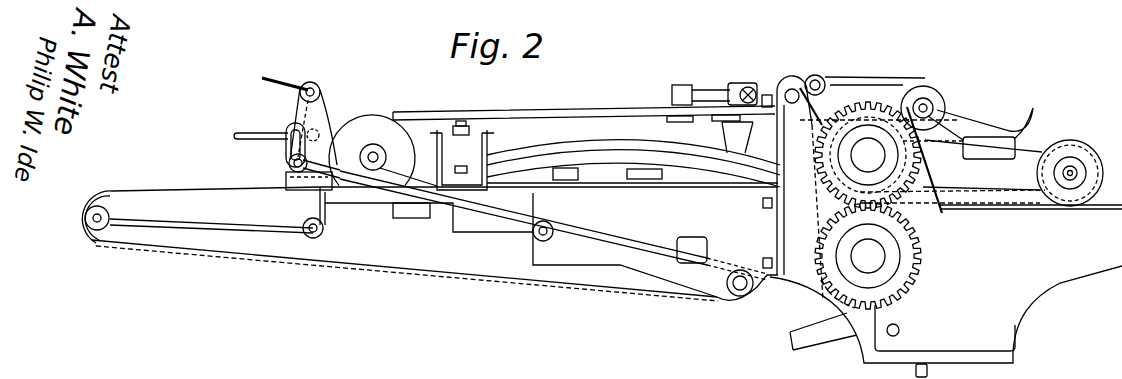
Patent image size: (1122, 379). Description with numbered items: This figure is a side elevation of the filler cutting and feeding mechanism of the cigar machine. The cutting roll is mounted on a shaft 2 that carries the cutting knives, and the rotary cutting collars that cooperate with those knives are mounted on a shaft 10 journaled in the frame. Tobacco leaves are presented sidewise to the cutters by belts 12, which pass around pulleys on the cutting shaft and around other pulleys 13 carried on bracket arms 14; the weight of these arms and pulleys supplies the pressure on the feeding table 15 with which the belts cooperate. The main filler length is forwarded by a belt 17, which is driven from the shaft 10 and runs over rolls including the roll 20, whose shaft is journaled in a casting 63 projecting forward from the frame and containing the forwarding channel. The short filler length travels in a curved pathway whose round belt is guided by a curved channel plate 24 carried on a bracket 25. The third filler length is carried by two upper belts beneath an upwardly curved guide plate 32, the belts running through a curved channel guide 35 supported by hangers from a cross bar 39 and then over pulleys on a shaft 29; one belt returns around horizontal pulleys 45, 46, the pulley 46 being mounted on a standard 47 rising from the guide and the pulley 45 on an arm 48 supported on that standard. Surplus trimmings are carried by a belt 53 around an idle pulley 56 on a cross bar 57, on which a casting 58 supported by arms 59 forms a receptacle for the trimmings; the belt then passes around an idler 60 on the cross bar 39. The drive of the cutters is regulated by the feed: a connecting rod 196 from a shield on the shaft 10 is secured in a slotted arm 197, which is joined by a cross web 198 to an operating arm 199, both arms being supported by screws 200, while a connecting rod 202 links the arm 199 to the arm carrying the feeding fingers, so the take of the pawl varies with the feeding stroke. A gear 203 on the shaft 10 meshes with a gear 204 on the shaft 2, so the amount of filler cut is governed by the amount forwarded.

The shaft 2 is at (868, 155).
The shaft 10 is at (868, 256).
The belts 12 is at (1040, 150).
The pulleys 13 is at (1080, 155).
The bracket arms 14 is at (981, 179).
The feeding table 15 is at (1100, 207).
The belt 17 is at (584, 284).
The roll 20 is at (80, 218).
The curved channel plate 24 is at (663, 183).
The bracket 25 is at (647, 171).
The shaft 29 is at (374, 153).
The guide plate 32 is at (720, 172).
The channel guide 35 is at (620, 144).
The cross bar 39 is at (792, 88).
The pulley 45 is at (667, 106).
The pulley 46 is at (755, 94).
The standard 47 is at (737, 137).
The arm 48 is at (704, 92).
The belt 53 is at (870, 77).
The idle pulley 56 is at (921, 95).
The cross bar 57 is at (930, 105).
The casting 58 is at (1030, 115).
The arms 59 is at (953, 111).
The idler 60 is at (822, 80).
The casting 63 is at (201, 215).
The connecting rod 196 is at (663, 247).
The slotted arm 197 is at (285, 148).
The cross web 198 is at (313, 87).
The operating arm 199 is at (327, 110).
The screws 200 is at (271, 77).
The connecting rod 202 is at (250, 132).
The gear 203 is at (908, 265).
The gear 204 is at (910, 188).